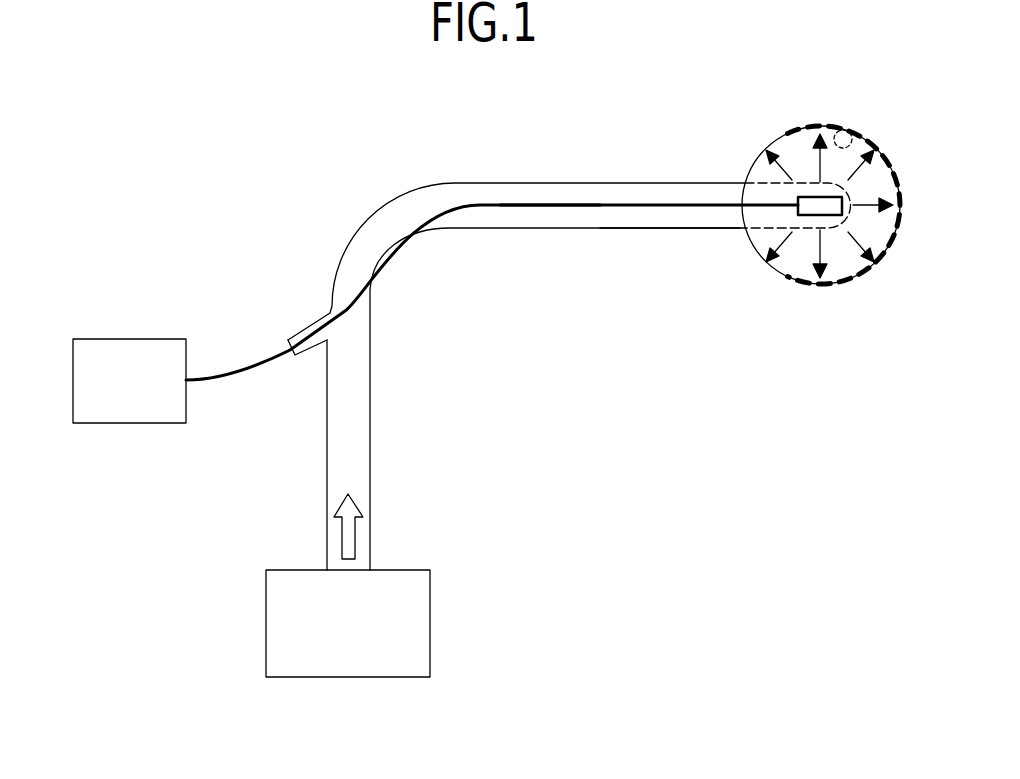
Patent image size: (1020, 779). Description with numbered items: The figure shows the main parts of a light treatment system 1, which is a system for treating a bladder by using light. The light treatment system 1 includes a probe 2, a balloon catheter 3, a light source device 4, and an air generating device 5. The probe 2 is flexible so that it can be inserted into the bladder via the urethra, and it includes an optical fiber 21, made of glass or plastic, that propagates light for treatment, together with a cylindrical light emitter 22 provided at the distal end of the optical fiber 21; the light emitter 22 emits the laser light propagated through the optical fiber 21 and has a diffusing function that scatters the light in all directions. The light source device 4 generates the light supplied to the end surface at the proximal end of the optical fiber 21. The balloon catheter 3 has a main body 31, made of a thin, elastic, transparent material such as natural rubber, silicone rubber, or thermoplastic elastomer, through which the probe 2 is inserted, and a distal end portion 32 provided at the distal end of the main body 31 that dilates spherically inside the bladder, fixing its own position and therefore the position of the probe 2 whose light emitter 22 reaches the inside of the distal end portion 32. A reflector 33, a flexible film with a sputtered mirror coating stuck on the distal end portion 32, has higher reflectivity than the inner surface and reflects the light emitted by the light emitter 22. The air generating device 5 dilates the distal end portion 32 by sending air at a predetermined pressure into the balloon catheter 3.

The light treatment system 1 is at (686, 420).
The probe 2 is at (251, 349).
The balloon catheter 3 is at (576, 176).
The light source device 4 is at (128, 339).
The air generating device 5 is at (430, 620).
The optical fiber 21 is at (557, 208).
The light emitter 22 is at (812, 216).
The main body 31 is at (670, 229).
The distal end portion 32 is at (783, 134).
The reflector 33 is at (845, 130).